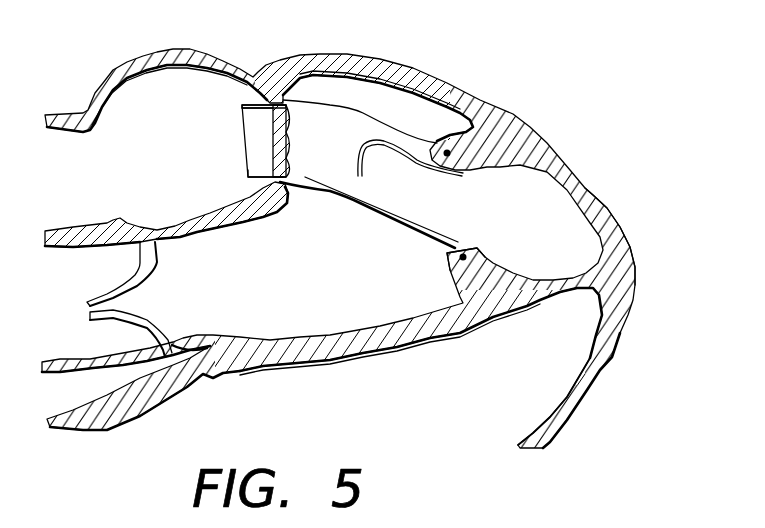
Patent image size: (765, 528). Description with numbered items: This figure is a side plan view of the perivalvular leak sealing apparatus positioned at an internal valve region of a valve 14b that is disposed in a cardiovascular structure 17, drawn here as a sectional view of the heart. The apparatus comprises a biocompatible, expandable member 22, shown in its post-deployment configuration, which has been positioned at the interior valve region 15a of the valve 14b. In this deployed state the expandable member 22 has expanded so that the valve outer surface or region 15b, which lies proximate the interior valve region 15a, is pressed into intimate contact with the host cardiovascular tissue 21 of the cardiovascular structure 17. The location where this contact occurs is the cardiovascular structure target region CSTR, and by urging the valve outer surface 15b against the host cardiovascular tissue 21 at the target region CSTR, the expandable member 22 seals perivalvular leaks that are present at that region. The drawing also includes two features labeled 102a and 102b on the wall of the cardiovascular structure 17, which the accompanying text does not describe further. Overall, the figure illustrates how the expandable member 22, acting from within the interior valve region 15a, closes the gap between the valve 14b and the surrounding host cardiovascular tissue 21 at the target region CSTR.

The cardiovascular structure 17 is at (230, 53).
The valve 14b is at (338, 110).
The expandable member 22 is at (272, 151).
The cardiovascular structure target region CSTR is at (242, 100).
The interior valve region 15a is at (248, 175).
The valve outer surface 15b is at (290, 180).
The host cardiovascular tissue 21 is at (218, 213).
The first anchor 102a is at (500, 167).
The second anchor 102b is at (492, 258).